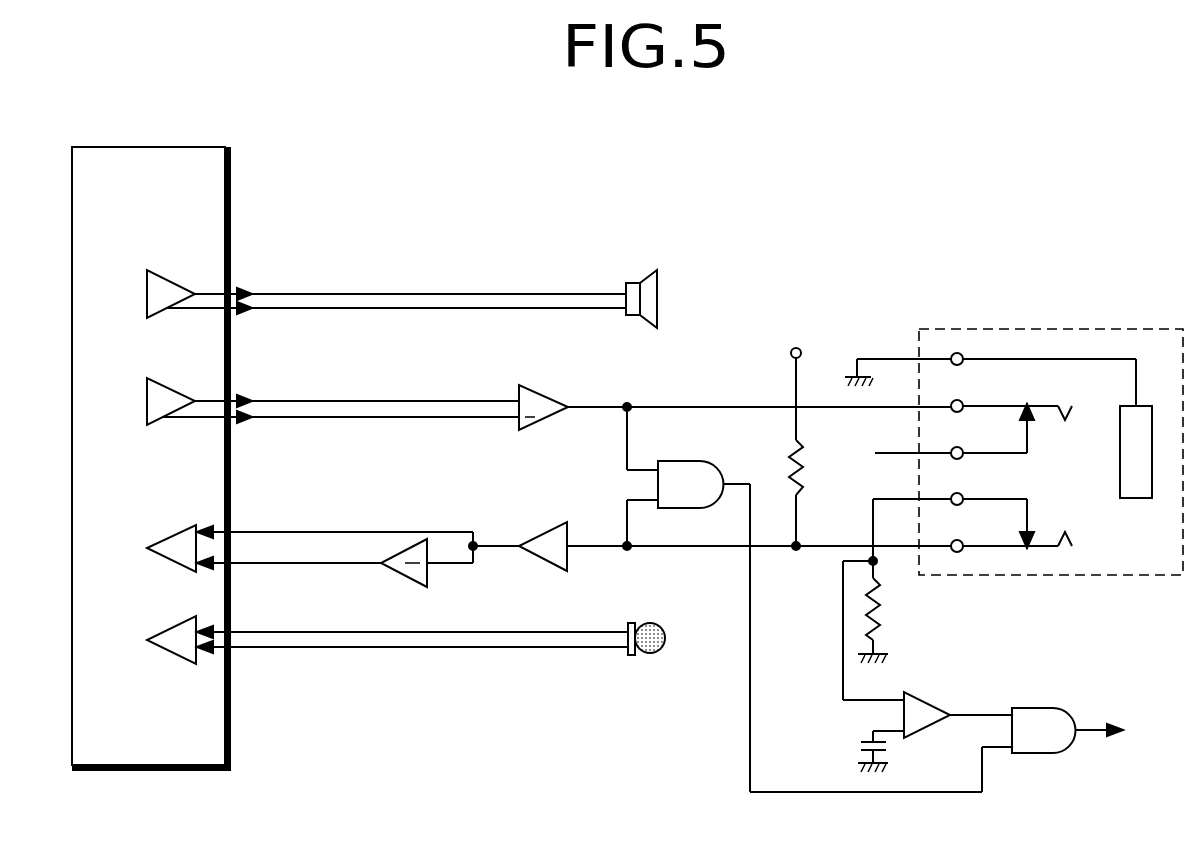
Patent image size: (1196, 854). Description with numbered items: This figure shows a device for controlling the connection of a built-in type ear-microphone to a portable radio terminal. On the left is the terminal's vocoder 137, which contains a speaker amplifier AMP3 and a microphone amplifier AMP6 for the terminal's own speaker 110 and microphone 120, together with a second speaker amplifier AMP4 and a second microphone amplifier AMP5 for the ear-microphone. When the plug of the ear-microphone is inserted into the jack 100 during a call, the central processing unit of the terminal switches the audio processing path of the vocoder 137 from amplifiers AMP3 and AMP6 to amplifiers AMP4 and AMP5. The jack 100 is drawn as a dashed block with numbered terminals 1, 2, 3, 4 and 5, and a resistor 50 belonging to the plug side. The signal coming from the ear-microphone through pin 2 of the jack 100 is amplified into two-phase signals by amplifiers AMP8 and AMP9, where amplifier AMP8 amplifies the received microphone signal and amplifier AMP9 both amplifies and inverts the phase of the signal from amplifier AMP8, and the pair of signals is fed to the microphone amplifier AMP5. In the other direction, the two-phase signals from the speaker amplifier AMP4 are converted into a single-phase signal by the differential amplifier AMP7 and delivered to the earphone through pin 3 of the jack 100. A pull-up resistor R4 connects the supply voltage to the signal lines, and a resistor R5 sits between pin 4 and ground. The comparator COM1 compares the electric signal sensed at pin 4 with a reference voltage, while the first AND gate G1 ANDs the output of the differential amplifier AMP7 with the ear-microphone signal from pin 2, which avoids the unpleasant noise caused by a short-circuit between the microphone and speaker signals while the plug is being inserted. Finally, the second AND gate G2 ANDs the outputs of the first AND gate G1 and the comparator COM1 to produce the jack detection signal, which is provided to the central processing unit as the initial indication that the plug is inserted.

The vocoder 137 is at (150, 147).
The speaker 110 is at (660, 297).
The microphone 120 is at (653, 653).
The jack 100 is at (1014, 422).
The resistor of ear-microphone plug 50 is at (1136, 498).
The jack terminal 1 (ground) 1 is at (1043, 349).
The pin 2 is at (1011, 536).
The pin 3 is at (1011, 400).
The pin 4 is at (953, 511).
The jack terminal 5 is at (954, 431).
The speaker amplifier AMP3 is at (188, 258).
The speaker amplifier AMP4 is at (188, 365).
The microphone amplifier AMP5 is at (170, 535).
The microphone amplifier AMP6 is at (170, 627).
The differential amplifier AMP7 is at (566, 381).
The amplifier AMP8 is at (540, 527).
The amplifier AMP9 is at (396, 577).
The first AND gate G1 is at (700, 461).
The second AND gate G2 is at (1030, 708).
The pull-up resistor R4 is at (808, 435).
The resistor R5 is at (888, 581).
The comparator COM1 is at (950, 681).